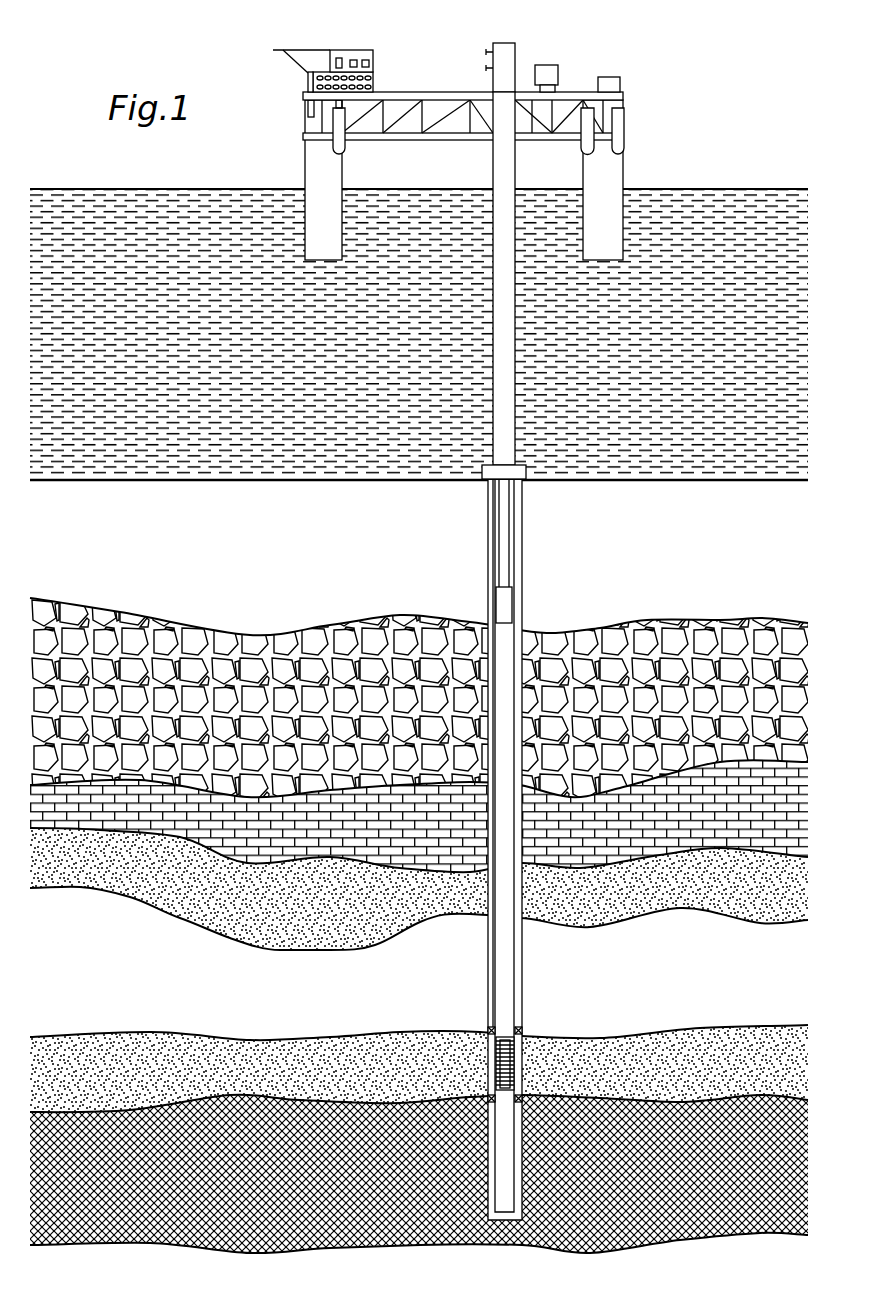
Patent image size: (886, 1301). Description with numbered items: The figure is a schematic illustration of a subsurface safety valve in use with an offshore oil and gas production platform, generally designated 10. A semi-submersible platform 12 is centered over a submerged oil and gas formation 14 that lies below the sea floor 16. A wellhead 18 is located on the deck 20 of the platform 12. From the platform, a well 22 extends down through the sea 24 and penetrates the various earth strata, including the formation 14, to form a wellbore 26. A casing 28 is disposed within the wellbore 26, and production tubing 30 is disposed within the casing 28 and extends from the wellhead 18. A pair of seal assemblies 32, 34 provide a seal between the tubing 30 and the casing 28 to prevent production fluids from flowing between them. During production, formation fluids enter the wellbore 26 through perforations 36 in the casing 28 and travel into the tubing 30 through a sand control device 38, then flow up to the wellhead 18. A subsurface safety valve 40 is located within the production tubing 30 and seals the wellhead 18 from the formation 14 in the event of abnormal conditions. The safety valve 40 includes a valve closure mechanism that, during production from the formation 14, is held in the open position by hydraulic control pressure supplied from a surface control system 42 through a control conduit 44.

The subsurface safety valve in use with an offshore oil and gas production platform 10 is at (700, 48).
The semi-submersible platform 12 is at (615, 135).
The submerged oil and gas formation 14 is at (419, 1163).
The sea floor 16 is at (730, 481).
The wellhead 18 is at (499, 43).
The deck 20 is at (623, 97).
The well 22 is at (492, 315).
The sea 24 is at (318, 337).
The wellbore 26 is at (518, 537).
The casing 28 is at (520, 578).
The production tubing 30 is at (503, 565).
The seal assembly 32 is at (522, 1030).
The seal assembly 34 is at (522, 1098).
The perforations 36 is at (516, 1062).
The sand control device 38 is at (496, 1066).
The subsurface safety valve 40 is at (510, 614).
The surface control system 42 is at (548, 65).
The control conduit 44 is at (493, 520).